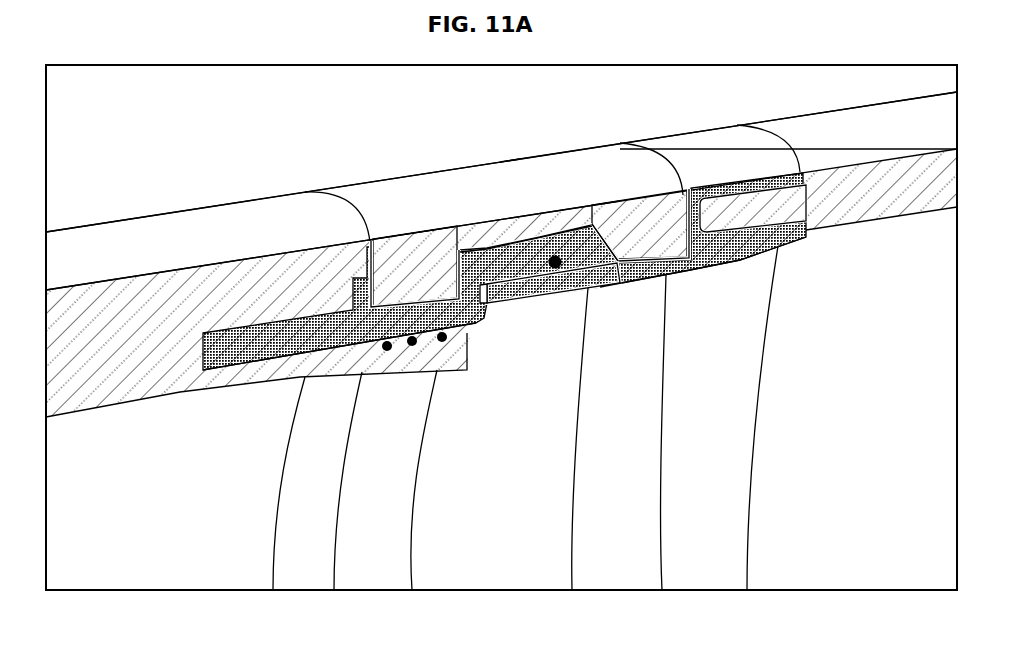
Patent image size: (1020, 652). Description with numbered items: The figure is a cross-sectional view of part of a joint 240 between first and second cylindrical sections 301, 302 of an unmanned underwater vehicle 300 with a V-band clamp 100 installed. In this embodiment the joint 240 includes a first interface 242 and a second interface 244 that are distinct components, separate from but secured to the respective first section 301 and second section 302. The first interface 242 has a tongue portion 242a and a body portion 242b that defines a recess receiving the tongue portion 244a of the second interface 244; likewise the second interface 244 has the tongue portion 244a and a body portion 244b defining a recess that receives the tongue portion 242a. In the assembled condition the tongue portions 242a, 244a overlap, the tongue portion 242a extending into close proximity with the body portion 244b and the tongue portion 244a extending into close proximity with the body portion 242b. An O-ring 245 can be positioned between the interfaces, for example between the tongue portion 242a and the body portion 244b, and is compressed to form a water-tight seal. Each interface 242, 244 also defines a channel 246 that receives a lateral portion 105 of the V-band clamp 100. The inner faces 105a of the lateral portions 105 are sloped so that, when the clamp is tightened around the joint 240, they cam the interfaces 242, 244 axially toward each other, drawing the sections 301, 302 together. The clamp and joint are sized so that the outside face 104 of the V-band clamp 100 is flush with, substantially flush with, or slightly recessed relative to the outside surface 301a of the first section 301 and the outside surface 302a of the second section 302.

The unmanned underwater vehicle 300 is at (108, 124).
The joint 240 is at (504, 271).
The first section 301 is at (203, 207).
The outside surface of the first section 301a is at (167, 253).
The second section 302 is at (798, 117).
The outside surface of the second section 302a is at (859, 145).
The V-band clamp 100 is at (498, 170).
The outside face 104 is at (549, 158).
The lateral portion 105 is at (395, 255).
The inner face 105a is at (597, 228).
The first interface 242 is at (370, 340).
The tongue portion 242a is at (518, 268).
The body portion 242b is at (433, 310).
The second interface 244 is at (650, 281).
The tongue portion 244a is at (530, 290).
The body portion 244b is at (600, 263).
The O-ring 245 is at (411, 344).
The channel 246 is at (408, 300).